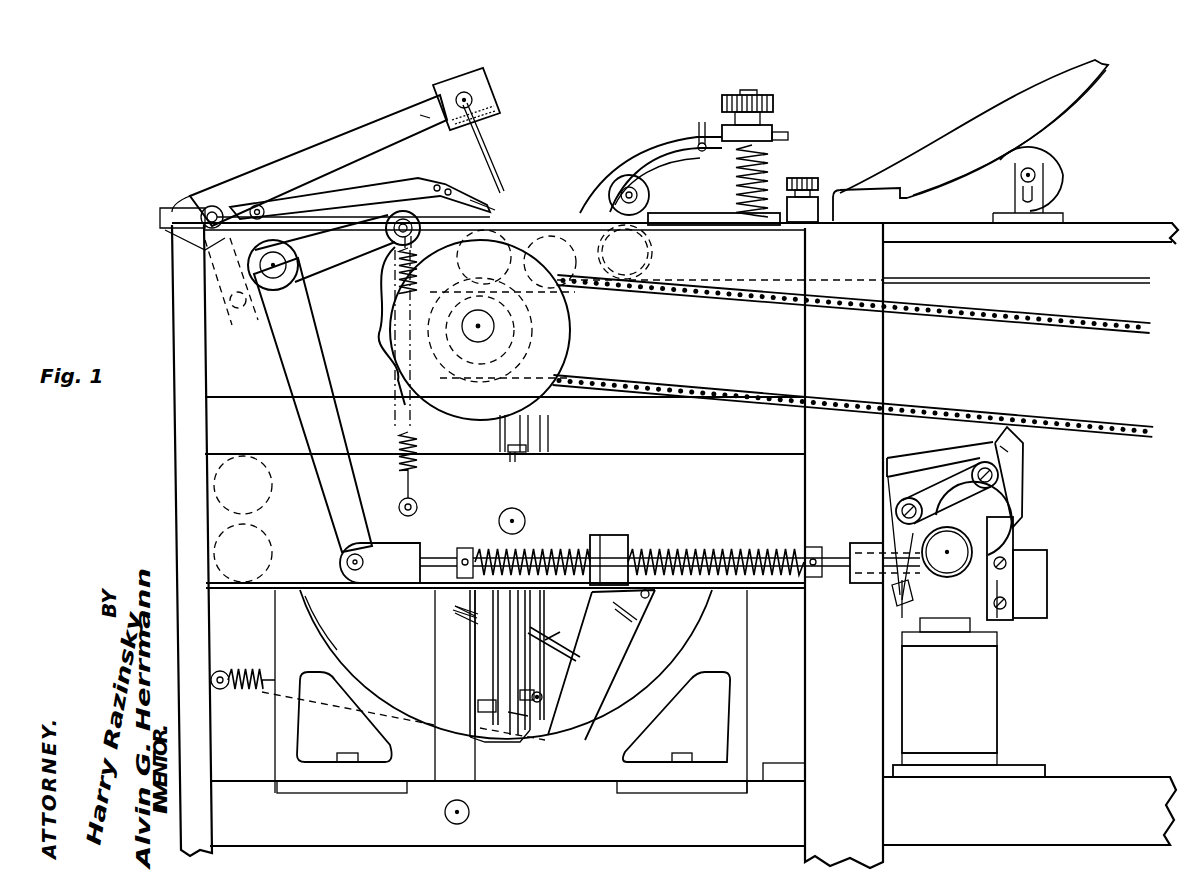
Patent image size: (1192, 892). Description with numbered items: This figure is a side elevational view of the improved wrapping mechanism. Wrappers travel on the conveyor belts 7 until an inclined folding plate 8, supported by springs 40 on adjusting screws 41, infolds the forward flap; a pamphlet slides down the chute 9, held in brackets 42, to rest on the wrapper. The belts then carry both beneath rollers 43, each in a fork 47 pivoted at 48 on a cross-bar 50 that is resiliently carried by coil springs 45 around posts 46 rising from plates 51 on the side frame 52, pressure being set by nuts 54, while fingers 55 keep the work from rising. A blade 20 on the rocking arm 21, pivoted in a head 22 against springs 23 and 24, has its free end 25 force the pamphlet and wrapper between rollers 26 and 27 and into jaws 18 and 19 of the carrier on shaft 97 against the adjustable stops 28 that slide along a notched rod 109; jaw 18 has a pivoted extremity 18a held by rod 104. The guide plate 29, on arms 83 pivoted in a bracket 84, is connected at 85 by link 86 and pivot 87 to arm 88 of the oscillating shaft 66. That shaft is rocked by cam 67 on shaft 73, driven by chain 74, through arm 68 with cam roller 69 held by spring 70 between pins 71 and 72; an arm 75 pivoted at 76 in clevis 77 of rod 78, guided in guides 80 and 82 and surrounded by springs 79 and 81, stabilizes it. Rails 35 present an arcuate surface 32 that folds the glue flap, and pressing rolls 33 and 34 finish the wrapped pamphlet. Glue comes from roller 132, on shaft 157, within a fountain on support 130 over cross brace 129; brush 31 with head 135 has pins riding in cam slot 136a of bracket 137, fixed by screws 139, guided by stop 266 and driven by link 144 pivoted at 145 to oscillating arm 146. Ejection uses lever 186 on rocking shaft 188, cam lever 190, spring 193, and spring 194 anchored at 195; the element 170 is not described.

The conveyor belts 7 is at (1092, 222).
The folding plate 8 is at (870, 204).
The chute 9 is at (976, 170).
The jaw 18 is at (527, 610).
The pivoted jaw extremity 18a is at (518, 712).
The jaw 19 is at (520, 440).
The blade 20 is at (500, 168).
The rocking arm 21 is at (368, 128).
The head 22 is at (490, 90).
The spring 23 is at (497, 118).
The spring 24 is at (418, 138).
The free end of blade 25 is at (500, 202).
The roller 26 is at (492, 242).
The roller 27 is at (560, 232).
The adjustable stops 28 is at (512, 460).
The guide plate 29 is at (455, 190).
The brush 31 is at (947, 567).
The arcuate surface 32 is at (320, 622).
The pressing roll 33 is at (243, 457).
The pressing roll 34 is at (243, 525).
The guide rails 35 is at (345, 680).
The springs 40 is at (803, 228).
The adjusting screws 41 is at (818, 182).
The brackets 42 is at (1003, 197).
The rollers 43 is at (650, 200).
The coil springs 45 is at (750, 95).
The posts 46 is at (770, 160).
The fork 47 is at (678, 168).
The pivot 48 is at (702, 143).
The cross-bar 50 is at (775, 132).
The plates 51 is at (712, 228).
The side frame 52 is at (622, 455).
The nuts 54 is at (775, 105).
The fingers 55 is at (668, 140).
The oscillating shaft 66 is at (276, 278).
The cam 67 is at (385, 330).
The arm 68 is at (330, 278).
The cam roller 69 is at (400, 256).
The spring 70 is at (395, 296).
The pin 71 is at (386, 232).
The pin 72 is at (418, 505).
The shaft 73 is at (476, 338).
The chain 74 is at (650, 310).
The arm 75 is at (322, 478).
The pivot 76 is at (347, 562).
The clevis 77 is at (420, 548).
The rod 78 is at (452, 555).
The spring 79 is at (565, 553).
The guide 80 is at (608, 535).
The spring 81 is at (705, 555).
The guide 82 is at (862, 548).
The arms 83 is at (378, 178).
The bracket 84 is at (255, 205).
The pivot 85 is at (212, 205).
The link 86 is at (170, 225).
The pivot 87 is at (232, 325).
The arm 88 is at (255, 325).
The carrier shaft 97 is at (520, 516).
The rod 104 is at (538, 670).
The notched rod 109 is at (530, 440).
The cross brace 129 is at (968, 755).
The support 130 is at (985, 682).
The glue-distributing roller 132 is at (990, 545).
The brush head 135 is at (1020, 466).
The cam slot 136a is at (895, 483).
The bracket 137 is at (912, 458).
The screws 139 is at (1005, 603).
The link 144 is at (955, 472).
The pivot 145 is at (895, 510).
The oscillating arm 146 is at (890, 597).
The shaft 157 is at (1015, 558).
The plate 170 is at (1000, 520).
The lever 186 is at (448, 625).
The rocking shaft 188 is at (468, 812).
The cam lever 190 is at (605, 648).
The spring 193 is at (558, 650).
The spring 194 is at (250, 672).
The frame attachment 195 is at (220, 662).
The stop 266 is at (1025, 478).